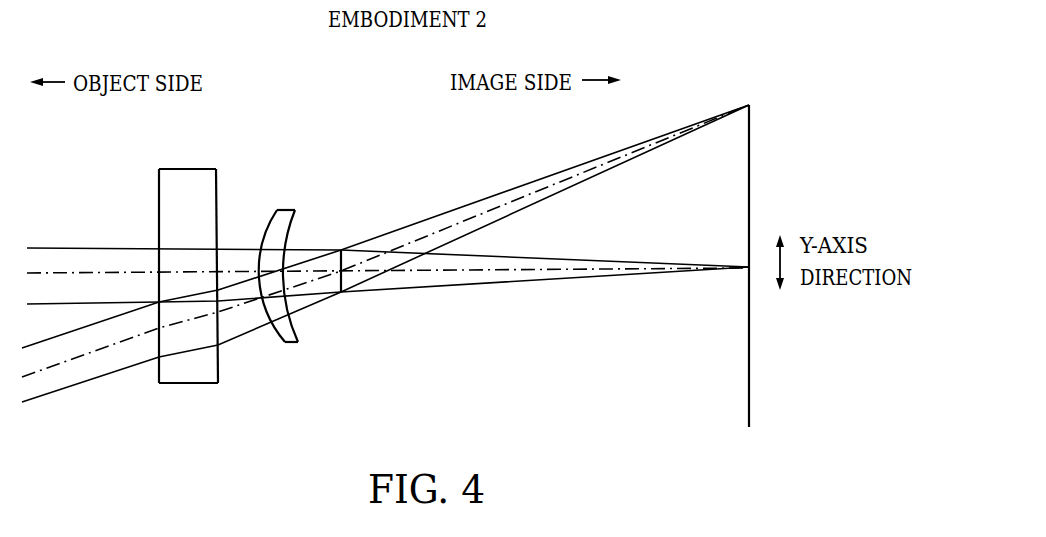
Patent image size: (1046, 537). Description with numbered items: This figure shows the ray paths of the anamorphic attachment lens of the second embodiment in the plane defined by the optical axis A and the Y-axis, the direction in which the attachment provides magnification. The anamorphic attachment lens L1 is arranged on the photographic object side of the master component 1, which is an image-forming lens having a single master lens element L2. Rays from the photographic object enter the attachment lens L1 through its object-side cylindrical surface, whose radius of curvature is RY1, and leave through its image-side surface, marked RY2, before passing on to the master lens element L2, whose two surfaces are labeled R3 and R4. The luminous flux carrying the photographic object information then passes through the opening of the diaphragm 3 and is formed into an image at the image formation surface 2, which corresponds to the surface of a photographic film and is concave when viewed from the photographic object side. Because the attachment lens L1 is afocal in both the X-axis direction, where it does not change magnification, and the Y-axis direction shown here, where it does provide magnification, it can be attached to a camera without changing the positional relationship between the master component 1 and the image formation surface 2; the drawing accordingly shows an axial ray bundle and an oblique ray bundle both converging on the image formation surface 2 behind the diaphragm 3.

The master component 1 is at (219, 289).
The image formation surface 2 is at (749, 331).
The diaphragm 3 is at (342, 301).
The optical axis A is at (80, 270).
The anamorphic attachment lens L1 is at (193, 289).
The master lens element L2 is at (296, 283).
The radius of curvature of object-side cylindrical surface RY1 is at (158, 172).
The image-side surface of first lens (Y direction) RY2 is at (217, 173).
The object-side surface of second lens R3 is at (266, 232).
The image-side surface of second lens R4 is at (290, 233).